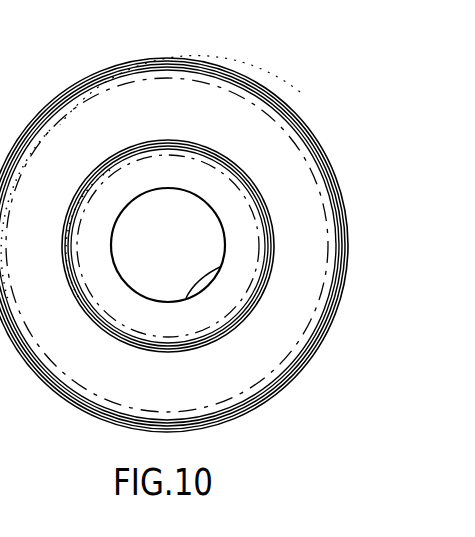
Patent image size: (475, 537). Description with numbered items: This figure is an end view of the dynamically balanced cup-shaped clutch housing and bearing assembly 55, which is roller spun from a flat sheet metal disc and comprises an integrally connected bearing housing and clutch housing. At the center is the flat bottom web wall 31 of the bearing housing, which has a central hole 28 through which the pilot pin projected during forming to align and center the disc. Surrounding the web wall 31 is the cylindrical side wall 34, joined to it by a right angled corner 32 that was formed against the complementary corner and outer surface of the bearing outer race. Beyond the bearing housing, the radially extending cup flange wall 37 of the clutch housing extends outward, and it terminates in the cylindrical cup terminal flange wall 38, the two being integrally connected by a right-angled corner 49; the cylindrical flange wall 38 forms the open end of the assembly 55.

The cup-shaped clutch housing and bearing assembly 55 is at (106, 58).
The cylindrical cup terminal flange wall 38 is at (238, 73).
The right-angled corner 49 is at (318, 348).
The radially extending cup flange wall 37 is at (257, 363).
The cylindrical side wall 34 is at (271, 234).
The right angled corner 32 is at (253, 298).
The flat bottom web wall 31 is at (230, 198).
The central hole 28 is at (217, 268).